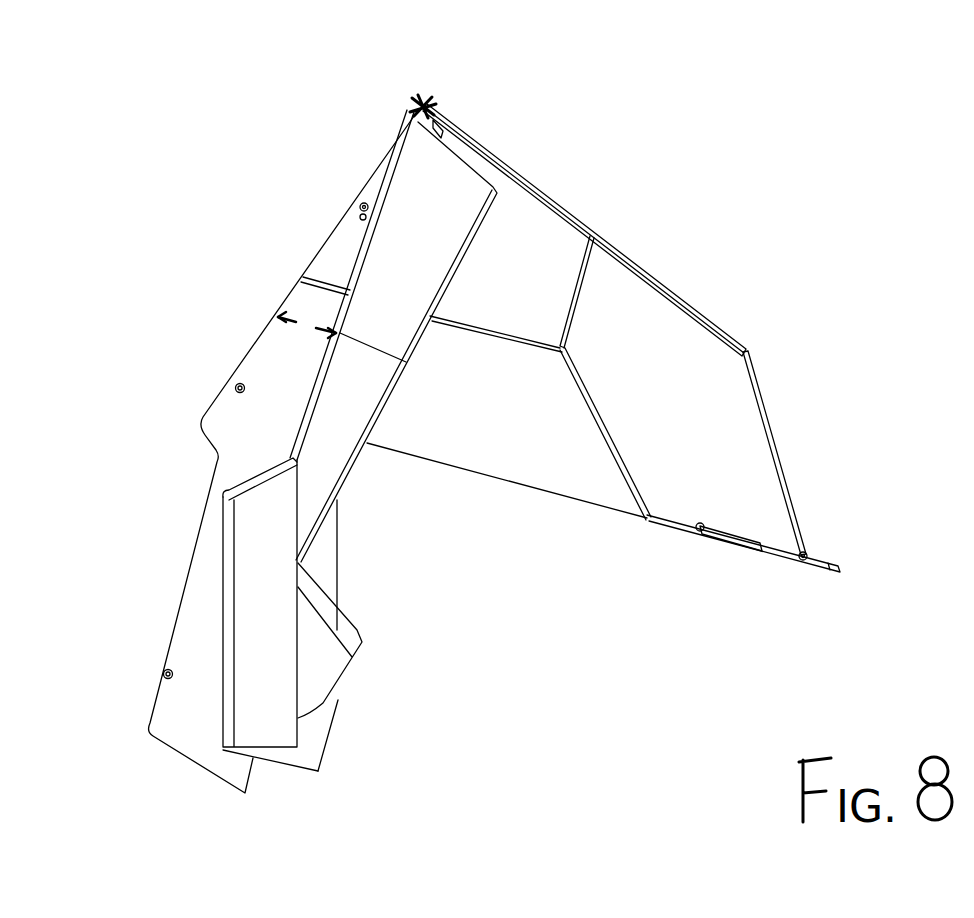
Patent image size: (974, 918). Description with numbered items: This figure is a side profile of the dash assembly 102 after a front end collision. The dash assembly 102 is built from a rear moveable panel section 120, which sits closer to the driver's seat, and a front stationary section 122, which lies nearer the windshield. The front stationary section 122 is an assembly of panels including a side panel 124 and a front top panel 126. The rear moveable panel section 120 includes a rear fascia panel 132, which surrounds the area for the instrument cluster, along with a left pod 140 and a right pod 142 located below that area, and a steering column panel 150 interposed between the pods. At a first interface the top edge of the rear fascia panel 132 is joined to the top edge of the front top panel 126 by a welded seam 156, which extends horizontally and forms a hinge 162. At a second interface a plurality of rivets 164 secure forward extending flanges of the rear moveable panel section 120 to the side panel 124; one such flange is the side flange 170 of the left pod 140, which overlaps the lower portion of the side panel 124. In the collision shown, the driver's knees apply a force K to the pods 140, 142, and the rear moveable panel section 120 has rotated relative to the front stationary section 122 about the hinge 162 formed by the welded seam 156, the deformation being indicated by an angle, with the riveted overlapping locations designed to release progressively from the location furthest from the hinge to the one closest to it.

The dash assembly 102 is at (740, 258).
The rear moveable panel section 120 is at (377, 517).
The front stationary section 122 is at (620, 538).
The side panel 124 is at (278, 357).
The front top panel 126 is at (758, 388).
The rear fascia panel 132 is at (363, 257).
The left pod 140 is at (318, 745).
The right pod 142 is at (240, 590).
The steering column panel 150 is at (343, 638).
The welded seam 156 is at (417, 102).
The living hinge 162 is at (428, 103).
The rivets 164 is at (360, 207).
The side flange 170 is at (327, 717).
The force K is at (118, 633).